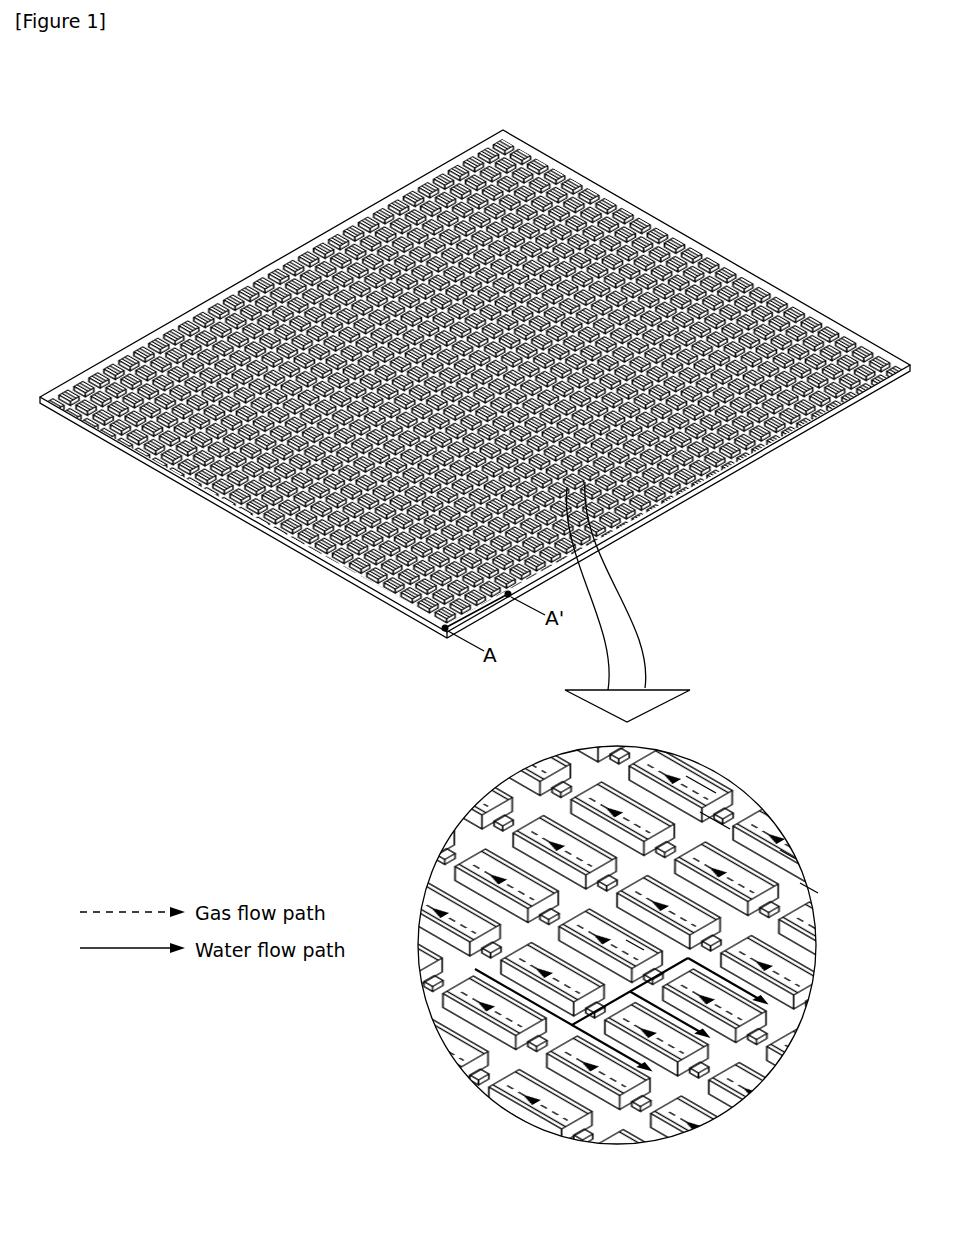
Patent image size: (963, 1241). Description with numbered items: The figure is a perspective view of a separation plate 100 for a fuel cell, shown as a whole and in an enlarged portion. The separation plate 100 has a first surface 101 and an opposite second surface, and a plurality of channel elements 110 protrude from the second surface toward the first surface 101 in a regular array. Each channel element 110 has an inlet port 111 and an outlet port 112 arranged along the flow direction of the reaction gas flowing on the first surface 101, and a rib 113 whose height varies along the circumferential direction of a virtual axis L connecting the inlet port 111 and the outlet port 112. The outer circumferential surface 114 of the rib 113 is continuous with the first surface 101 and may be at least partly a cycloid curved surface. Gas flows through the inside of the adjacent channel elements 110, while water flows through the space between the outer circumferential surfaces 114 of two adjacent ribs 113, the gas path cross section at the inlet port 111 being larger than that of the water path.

The separation plate 100 is at (579, 150).
The first surface 101 is at (842, 330).
The channel element 110 is at (692, 743).
The inlet port 111 is at (810, 888).
The outlet port 112 is at (792, 856).
The rib 113 is at (700, 786).
The outer circumferential surface 114 is at (712, 818).
The virtual axis L is at (635, 945).